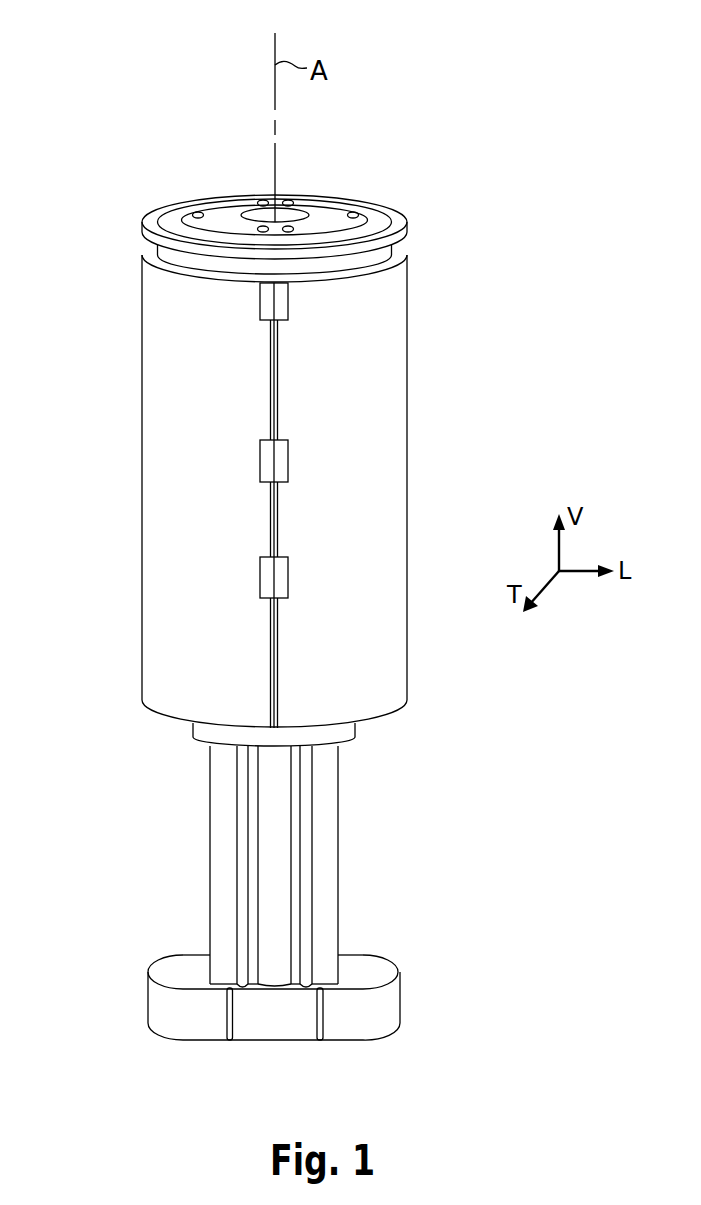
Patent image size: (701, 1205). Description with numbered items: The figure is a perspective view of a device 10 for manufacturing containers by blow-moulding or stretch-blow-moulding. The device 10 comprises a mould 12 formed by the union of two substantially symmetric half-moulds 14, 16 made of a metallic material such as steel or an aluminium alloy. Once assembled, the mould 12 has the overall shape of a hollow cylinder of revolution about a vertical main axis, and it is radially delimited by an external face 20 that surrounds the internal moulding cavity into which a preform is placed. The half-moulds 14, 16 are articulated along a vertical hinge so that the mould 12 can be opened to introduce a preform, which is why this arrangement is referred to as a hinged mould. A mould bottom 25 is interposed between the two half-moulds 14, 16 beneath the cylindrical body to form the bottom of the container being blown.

The device 10 is at (187, 172).
The mould 12 is at (116, 306).
The half-mould 14 is at (192, 508).
The half-mould 16 is at (379, 496).
The external face 20 is at (365, 365).
The mould bottom 25 is at (323, 815).